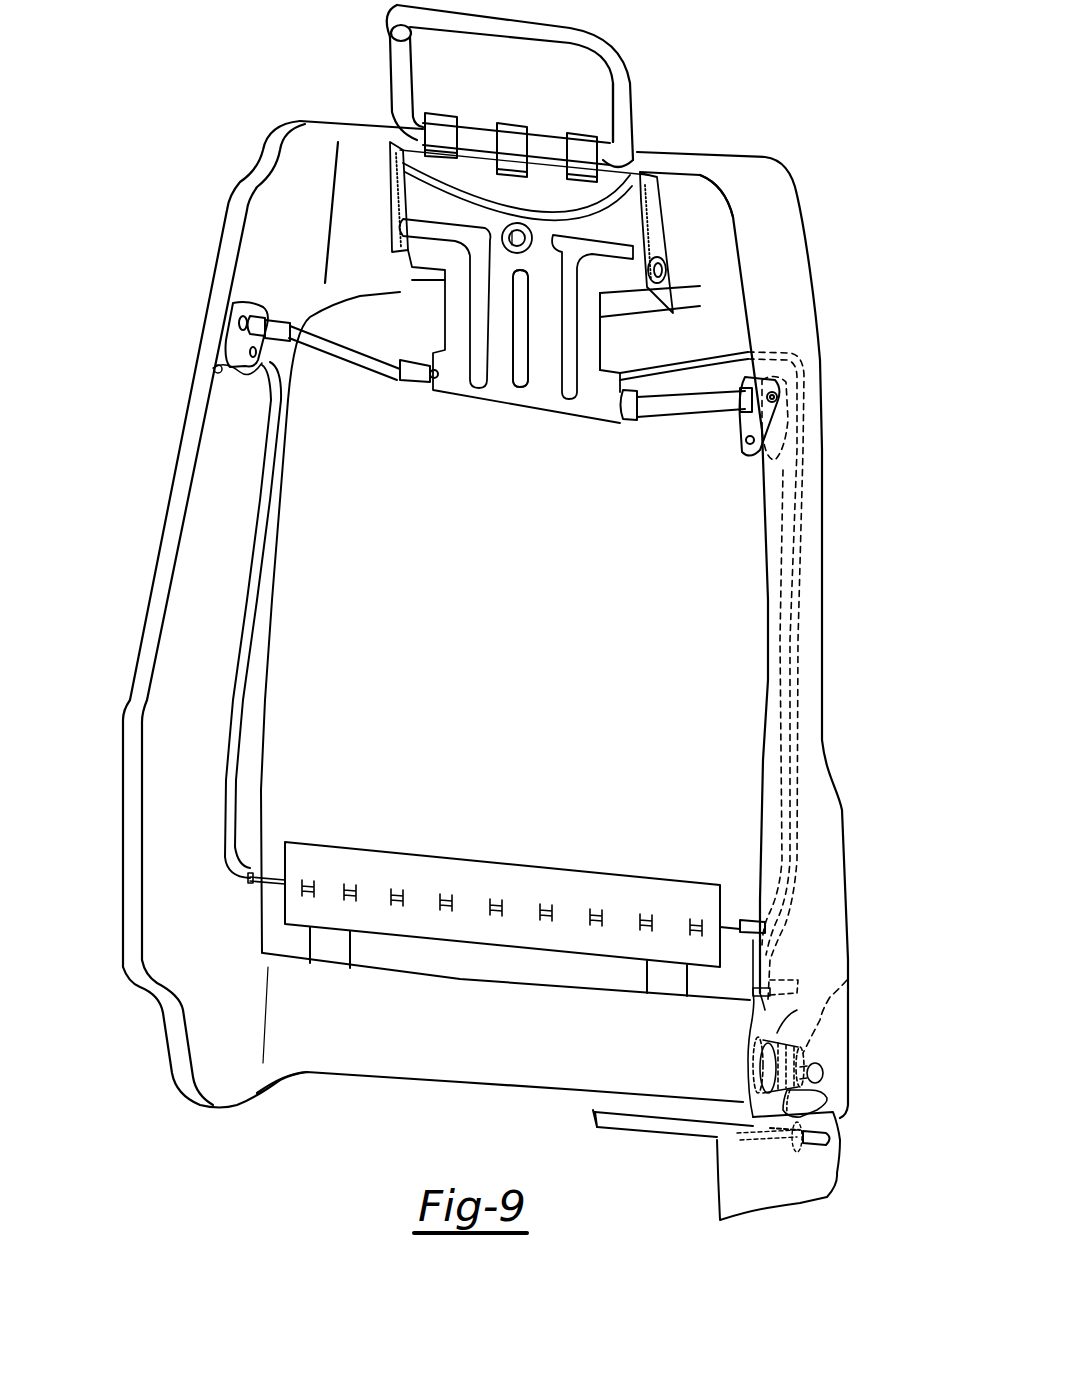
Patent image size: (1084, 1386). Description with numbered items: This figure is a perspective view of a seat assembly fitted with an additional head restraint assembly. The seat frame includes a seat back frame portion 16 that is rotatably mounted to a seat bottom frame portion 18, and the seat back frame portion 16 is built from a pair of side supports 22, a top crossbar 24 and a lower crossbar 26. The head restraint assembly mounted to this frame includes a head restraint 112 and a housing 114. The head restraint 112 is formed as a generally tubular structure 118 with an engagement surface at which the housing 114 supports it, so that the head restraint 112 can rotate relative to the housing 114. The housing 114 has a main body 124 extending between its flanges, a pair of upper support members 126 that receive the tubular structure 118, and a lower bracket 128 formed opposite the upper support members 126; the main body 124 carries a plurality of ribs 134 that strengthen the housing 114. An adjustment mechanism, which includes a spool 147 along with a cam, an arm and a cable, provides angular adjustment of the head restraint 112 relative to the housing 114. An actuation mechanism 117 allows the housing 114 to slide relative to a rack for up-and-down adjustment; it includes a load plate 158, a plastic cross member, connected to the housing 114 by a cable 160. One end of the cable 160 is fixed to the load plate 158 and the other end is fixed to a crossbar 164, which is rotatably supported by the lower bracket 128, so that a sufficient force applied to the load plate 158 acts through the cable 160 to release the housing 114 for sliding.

The seat back frame portion 16 is at (800, 238).
The seat bottom frame portion 18 is at (803, 1187).
The side supports 22 is at (192, 610).
The top crossbar 24 is at (712, 213).
The lower crossbar 26 is at (300, 1015).
The head restraint 112 is at (640, 59).
The housing 114 is at (623, 338).
The actuation mechanism 117 is at (549, 857).
The tubular structure 118 is at (638, 103).
The main body 124 is at (488, 257).
The upper support members 126 is at (578, 130).
The lower bracket 128 is at (598, 397).
The ribs 134 is at (528, 375).
The spool 147 is at (852, 975).
The load plate 158 is at (375, 882).
The cable 160 is at (273, 871).
The crossbar 164 is at (346, 357).